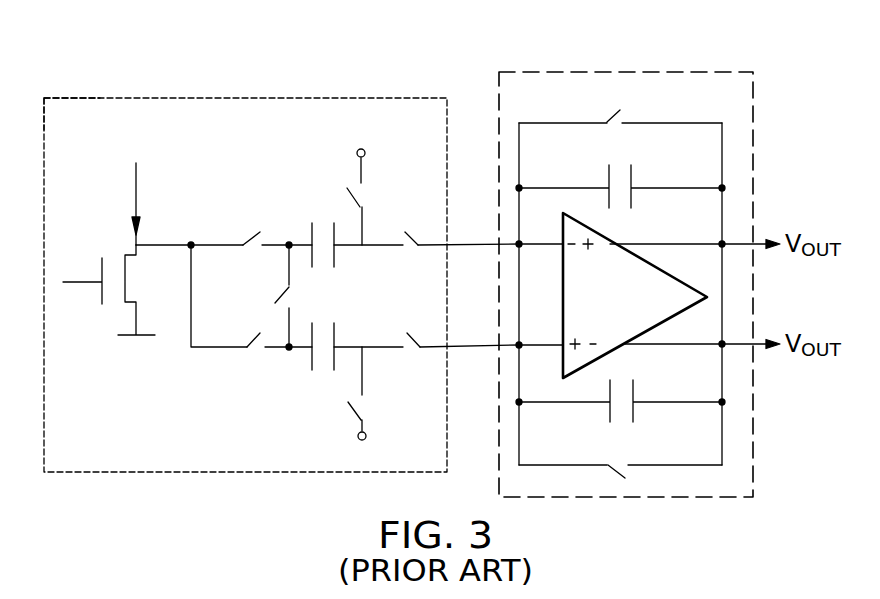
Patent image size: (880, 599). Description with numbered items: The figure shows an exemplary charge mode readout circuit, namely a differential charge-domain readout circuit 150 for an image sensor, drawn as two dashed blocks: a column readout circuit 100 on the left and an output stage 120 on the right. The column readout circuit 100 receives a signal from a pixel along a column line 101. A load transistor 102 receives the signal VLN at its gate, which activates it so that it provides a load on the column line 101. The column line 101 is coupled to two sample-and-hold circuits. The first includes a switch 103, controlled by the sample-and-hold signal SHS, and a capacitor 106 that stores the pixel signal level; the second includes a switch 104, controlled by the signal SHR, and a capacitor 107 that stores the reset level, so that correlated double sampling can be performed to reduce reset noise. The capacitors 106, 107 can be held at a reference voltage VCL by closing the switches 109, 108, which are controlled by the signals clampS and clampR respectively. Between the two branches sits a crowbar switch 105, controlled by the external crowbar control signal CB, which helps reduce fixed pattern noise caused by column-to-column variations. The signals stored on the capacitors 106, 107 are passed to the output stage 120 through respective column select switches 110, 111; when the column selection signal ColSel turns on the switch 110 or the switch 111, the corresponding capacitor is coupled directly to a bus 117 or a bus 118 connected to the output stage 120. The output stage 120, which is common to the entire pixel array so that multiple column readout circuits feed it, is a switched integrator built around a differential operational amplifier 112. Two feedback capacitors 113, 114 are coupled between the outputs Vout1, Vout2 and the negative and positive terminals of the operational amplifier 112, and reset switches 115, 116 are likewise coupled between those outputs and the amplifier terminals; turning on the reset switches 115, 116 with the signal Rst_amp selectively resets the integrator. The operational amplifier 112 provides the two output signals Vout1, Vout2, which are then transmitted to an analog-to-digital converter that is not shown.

The column readout circuit 100 is at (372, 98).
The differential charge-domain readout circuit 150 is at (83, 84).
The column line 101 is at (137, 192).
The load transistor 102 is at (110, 312).
The switch 103 is at (252, 248).
The switch 104 is at (252, 330).
The crowbar switch 105 is at (290, 290).
The capacitor 106 is at (320, 214).
The capacitor 107 is at (304, 370).
The switch 108 is at (350, 420).
The switch 109 is at (348, 176).
The column select switch 110 is at (404, 258).
The column select switch 111 is at (406, 355).
The differential operational amplifier 112 is at (656, 262).
The feedback capacitor 113 is at (642, 198).
The feedback capacitor 114 is at (641, 390).
The reset switch 115 is at (630, 112).
The reset switch 116 is at (633, 474).
The bus 117 is at (457, 235).
The bus 118 is at (457, 335).
The output stage 120 is at (755, 472).